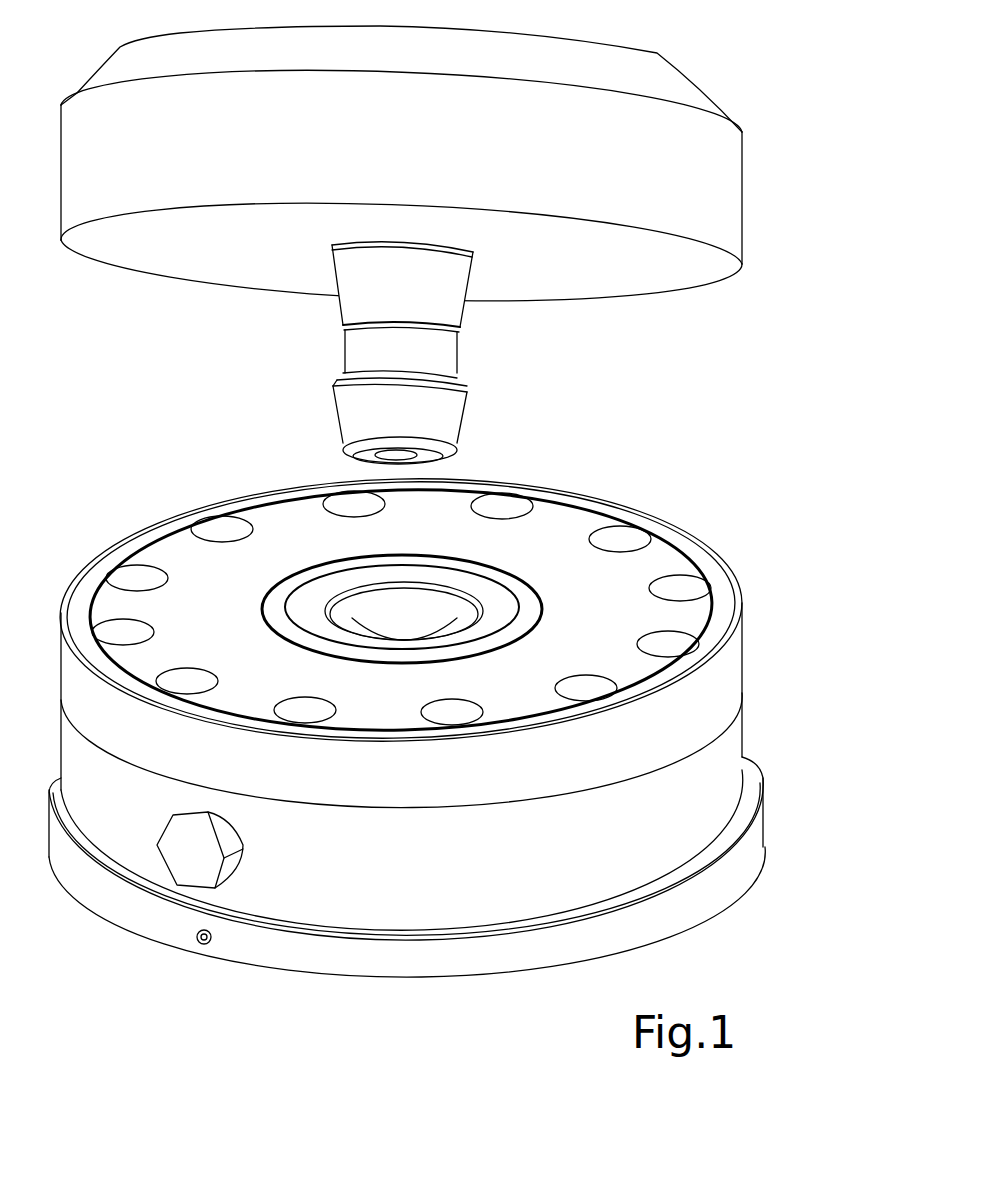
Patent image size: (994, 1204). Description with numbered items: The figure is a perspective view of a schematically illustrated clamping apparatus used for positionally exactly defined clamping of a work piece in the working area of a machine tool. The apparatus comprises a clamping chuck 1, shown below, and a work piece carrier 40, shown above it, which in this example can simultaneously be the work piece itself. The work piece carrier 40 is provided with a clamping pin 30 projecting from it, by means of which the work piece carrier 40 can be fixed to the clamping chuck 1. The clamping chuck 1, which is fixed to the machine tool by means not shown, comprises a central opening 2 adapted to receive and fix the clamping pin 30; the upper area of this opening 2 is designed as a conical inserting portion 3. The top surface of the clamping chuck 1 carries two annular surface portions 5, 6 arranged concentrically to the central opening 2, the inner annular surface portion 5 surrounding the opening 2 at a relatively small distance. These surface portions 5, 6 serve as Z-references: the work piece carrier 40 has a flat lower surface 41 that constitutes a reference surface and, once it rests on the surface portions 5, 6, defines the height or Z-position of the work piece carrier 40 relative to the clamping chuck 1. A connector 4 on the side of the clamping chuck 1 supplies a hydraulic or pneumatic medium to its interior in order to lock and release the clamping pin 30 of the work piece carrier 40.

The clamping chuck 1 is at (443, 694).
The central opening 2 is at (423, 610).
The conical inserting portion 3 is at (338, 615).
The connector 4 is at (262, 852).
The inner annular surface portion 5 is at (277, 612).
The outer annular surface portion 6 is at (70, 608).
The clamping pin 30 is at (508, 373).
The work piece carrier 40 is at (466, 200).
The flat lower surface 41 is at (667, 267).